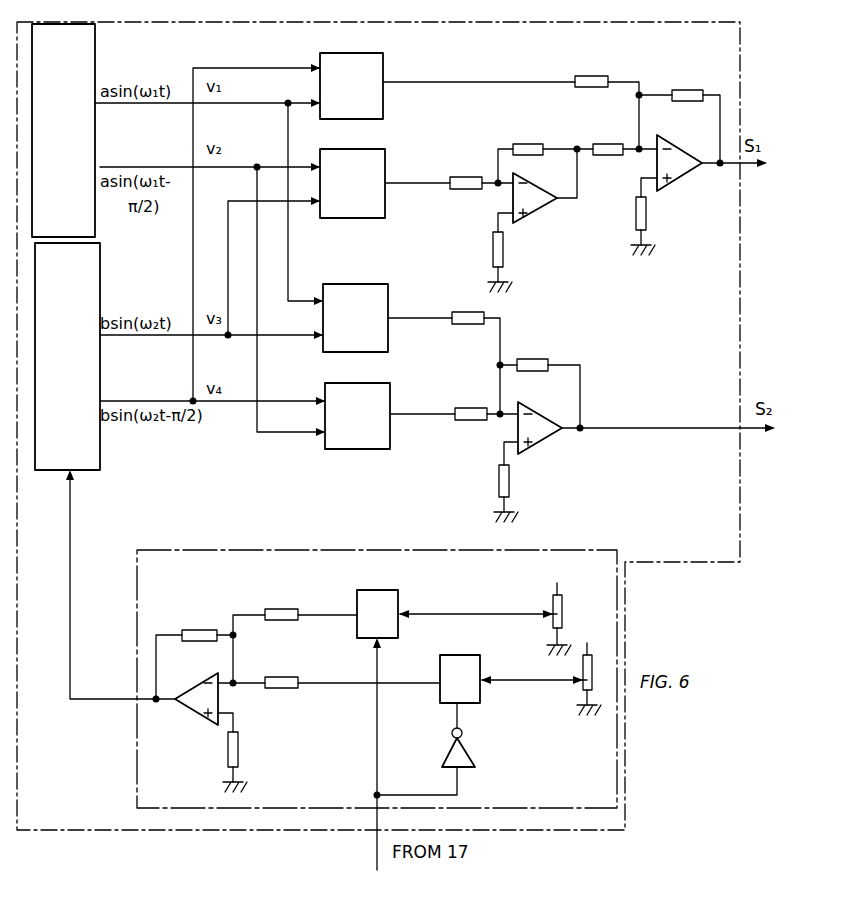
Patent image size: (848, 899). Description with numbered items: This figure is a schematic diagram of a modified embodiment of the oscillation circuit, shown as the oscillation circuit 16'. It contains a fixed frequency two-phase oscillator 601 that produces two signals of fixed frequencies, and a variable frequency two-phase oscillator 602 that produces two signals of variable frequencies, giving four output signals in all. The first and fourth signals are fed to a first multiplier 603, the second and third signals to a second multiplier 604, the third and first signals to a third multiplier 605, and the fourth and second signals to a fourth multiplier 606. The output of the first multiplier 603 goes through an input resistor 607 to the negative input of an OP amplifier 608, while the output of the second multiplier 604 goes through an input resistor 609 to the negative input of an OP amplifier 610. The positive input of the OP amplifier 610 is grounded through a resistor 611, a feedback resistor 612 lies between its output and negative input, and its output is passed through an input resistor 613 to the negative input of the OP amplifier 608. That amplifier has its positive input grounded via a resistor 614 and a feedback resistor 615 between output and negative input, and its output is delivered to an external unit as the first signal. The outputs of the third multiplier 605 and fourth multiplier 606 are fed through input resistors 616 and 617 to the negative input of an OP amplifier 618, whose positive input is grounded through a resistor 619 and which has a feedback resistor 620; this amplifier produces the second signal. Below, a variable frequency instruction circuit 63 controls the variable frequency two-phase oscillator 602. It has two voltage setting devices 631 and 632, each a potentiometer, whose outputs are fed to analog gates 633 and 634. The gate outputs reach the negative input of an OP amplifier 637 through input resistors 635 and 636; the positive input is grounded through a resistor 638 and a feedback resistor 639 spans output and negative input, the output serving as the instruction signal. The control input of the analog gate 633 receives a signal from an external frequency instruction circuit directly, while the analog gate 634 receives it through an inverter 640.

The fixed frequency two-phase oscillator 601 is at (97, 63).
The variable frequency two-phase oscillator 602 is at (100, 290).
The first multiplier 603 is at (385, 63).
The second multiplier 604 is at (385, 160).
The third multiplier 605 is at (375, 284).
The fourth multiplier 606 is at (390, 393).
The input resistor 607 is at (588, 76).
The OP amplifier 608 is at (677, 180).
The input resistor 609 is at (466, 177).
The OP amplifier 610 is at (526, 213).
The resistor 611 is at (505, 250).
The feedback resistor 612 is at (526, 144).
The input resistor 613 is at (596, 144).
The resistor 614 is at (648, 213).
The feedback resistor 615 is at (678, 90).
The input resistor 616 is at (464, 324).
The input resistor 617 is at (469, 420).
The OP amplifier 618 is at (540, 445).
The resistor 619 is at (510, 480).
The feedback resistor 620 is at (535, 359).
The variable frequency instruction circuit 63 is at (305, 548).
The oscillation circuit 16' is at (378, 426).
The voltage setting device 631 is at (551, 600).
The voltage setting device 632 is at (580, 690).
The analog gate 633 is at (398, 593).
The analog gate 634 is at (458, 655).
The input resistor 635 is at (273, 620).
The input resistor 636 is at (280, 688).
The OP amplifier 637 is at (184, 718).
The resistor 638 is at (240, 745).
The feedback resistor 639 is at (198, 630).
The inverter 640 is at (477, 754).